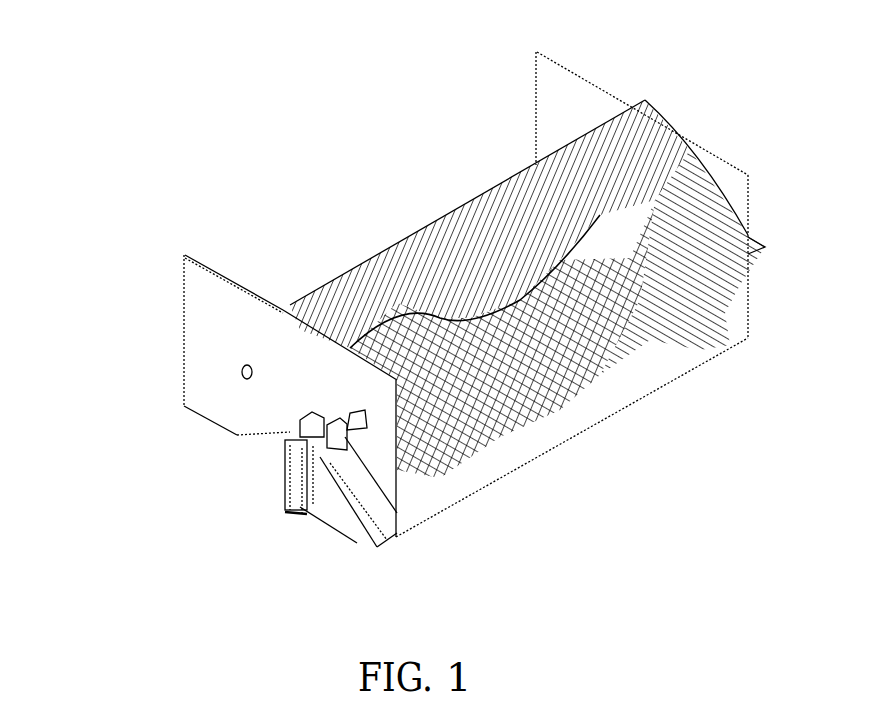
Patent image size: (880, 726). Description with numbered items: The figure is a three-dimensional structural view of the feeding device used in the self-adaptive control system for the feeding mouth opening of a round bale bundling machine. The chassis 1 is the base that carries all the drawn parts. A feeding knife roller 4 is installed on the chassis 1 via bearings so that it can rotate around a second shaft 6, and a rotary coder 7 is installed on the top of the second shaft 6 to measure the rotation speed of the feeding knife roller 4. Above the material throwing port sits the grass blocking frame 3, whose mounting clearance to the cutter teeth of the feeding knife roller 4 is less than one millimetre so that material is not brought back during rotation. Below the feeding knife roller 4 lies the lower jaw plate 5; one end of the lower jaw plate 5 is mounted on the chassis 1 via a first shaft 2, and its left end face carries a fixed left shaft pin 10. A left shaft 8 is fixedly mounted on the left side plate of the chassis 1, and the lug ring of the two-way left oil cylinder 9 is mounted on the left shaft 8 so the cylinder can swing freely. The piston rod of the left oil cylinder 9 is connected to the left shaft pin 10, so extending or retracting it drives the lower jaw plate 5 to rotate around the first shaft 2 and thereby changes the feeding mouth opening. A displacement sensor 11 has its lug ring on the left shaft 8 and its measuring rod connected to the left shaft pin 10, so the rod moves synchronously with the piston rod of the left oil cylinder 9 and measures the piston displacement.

The chassis 1 is at (210, 407).
The first shaft 2 is at (241, 365).
The grass blocking frame 3 is at (362, 277).
The feeding knife roller 4 is at (505, 180).
The lower jaw plate 5 is at (523, 448).
The second shaft 6 is at (396, 443).
The rotary coder 7 is at (396, 466).
The left shaft 8 is at (395, 535).
The left oil cylinder 9 is at (357, 543).
The left shaft pin 10 is at (293, 520).
The displacement sensor 11 is at (283, 482).